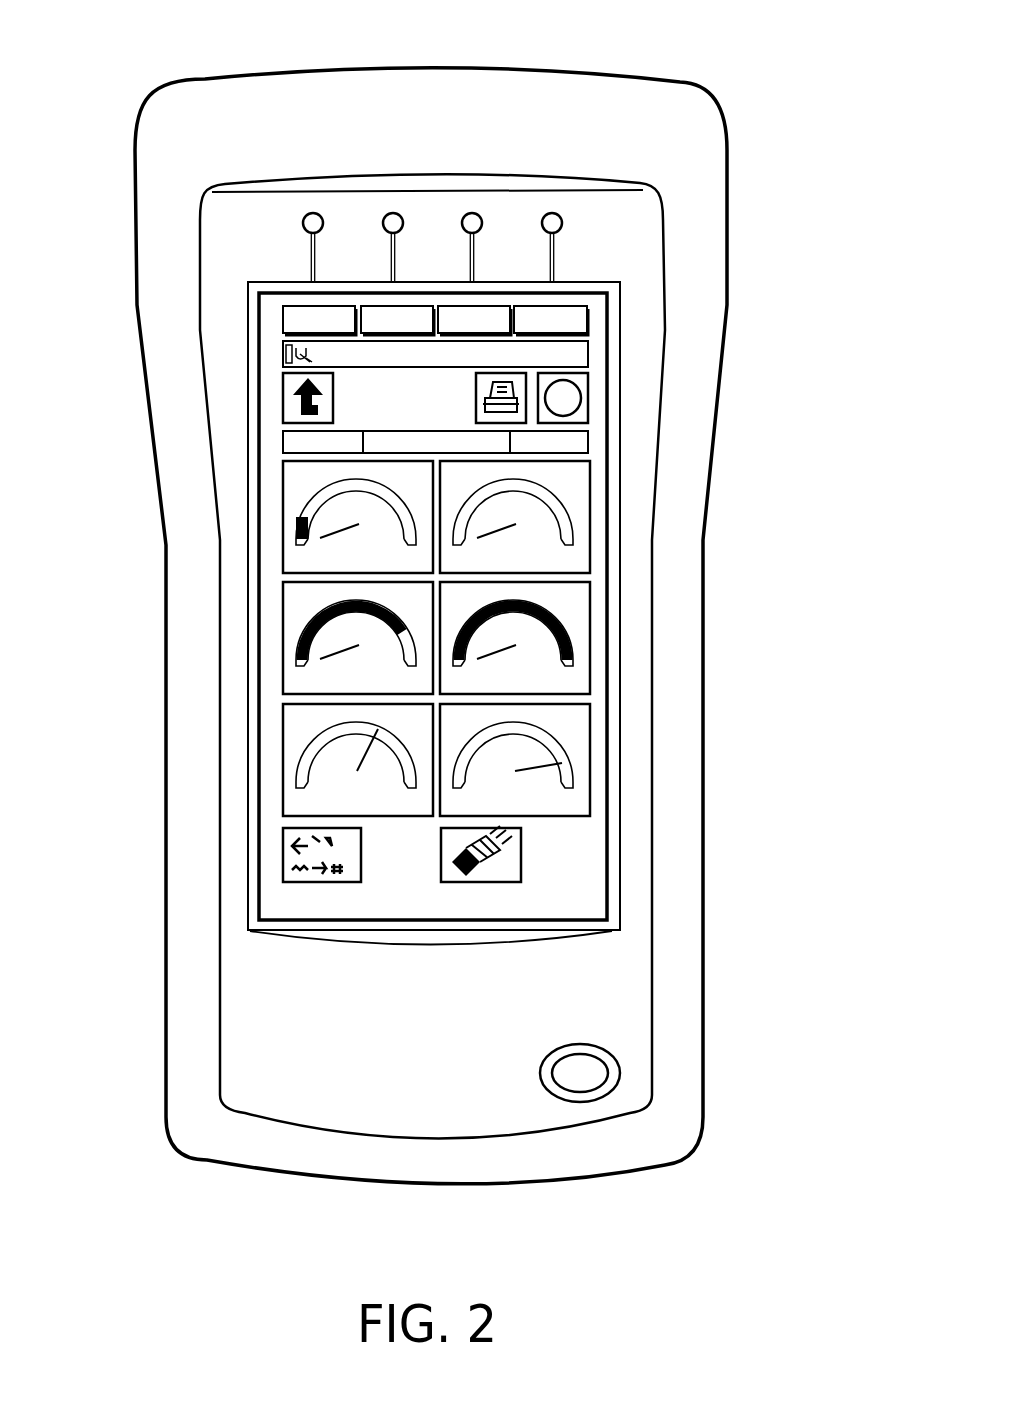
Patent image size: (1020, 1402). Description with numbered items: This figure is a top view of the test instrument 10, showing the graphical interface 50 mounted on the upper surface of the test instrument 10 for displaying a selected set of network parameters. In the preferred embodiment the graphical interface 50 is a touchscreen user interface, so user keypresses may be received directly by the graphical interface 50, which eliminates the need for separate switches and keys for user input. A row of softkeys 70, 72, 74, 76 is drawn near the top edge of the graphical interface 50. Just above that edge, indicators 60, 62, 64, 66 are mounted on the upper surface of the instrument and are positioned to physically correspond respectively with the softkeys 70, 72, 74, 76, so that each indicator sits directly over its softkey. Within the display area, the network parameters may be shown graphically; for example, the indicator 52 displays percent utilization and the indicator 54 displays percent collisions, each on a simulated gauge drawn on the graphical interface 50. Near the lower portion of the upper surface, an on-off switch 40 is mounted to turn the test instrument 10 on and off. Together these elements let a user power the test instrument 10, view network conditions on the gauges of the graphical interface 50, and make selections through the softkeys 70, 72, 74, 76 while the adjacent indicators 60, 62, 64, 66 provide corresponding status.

The test instrument 10 is at (572, 63).
The on-off switch 40 is at (623, 1072).
The graphical interface 50 is at (620, 604).
The indicator 52 is at (282, 532).
The indicator 54 is at (282, 652).
The indicator 60 is at (313, 211).
The indicator 62 is at (393, 211).
The indicator 64 is at (472, 211).
The indicator 66 is at (552, 211).
The softkey 70 is at (313, 306).
The softkey 72 is at (393, 306).
The softkey 74 is at (472, 306).
The softkey 76 is at (552, 306).